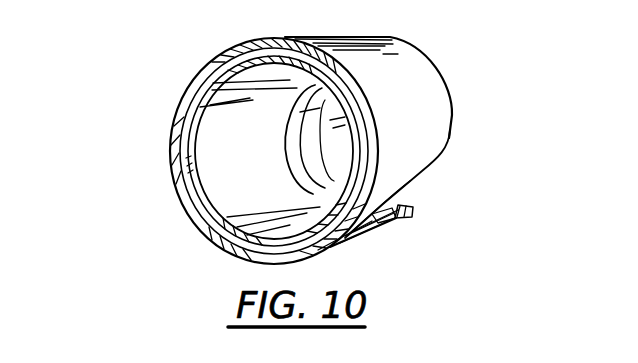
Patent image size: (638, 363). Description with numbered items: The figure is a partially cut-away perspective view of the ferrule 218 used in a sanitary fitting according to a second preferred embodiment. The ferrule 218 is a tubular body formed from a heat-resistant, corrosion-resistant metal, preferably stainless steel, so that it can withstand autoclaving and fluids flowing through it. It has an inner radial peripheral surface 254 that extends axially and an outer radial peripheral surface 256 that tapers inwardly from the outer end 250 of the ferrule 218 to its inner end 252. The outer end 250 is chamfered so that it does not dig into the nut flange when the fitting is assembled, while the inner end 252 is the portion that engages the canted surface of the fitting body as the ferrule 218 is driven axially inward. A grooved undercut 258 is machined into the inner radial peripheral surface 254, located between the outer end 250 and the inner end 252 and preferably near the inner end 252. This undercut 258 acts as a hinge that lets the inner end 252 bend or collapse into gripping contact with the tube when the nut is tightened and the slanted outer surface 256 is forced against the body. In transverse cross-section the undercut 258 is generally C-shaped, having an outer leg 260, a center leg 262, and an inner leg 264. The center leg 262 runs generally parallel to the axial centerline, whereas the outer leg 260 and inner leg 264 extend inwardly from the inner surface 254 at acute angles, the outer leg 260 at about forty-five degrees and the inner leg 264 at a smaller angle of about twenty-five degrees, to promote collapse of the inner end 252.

The ferrule 218 is at (470, 63).
The outer end 250 is at (174, 153).
The inner end 252 is at (452, 115).
The inner radial peripheral surface 254 is at (216, 197).
The outer radial peripheral surface 256 is at (395, 55).
The grooved undercut 258 is at (308, 174).
The outer leg 260 is at (408, 182).
The center leg 262 is at (395, 218).
The inner leg 264 is at (400, 198).